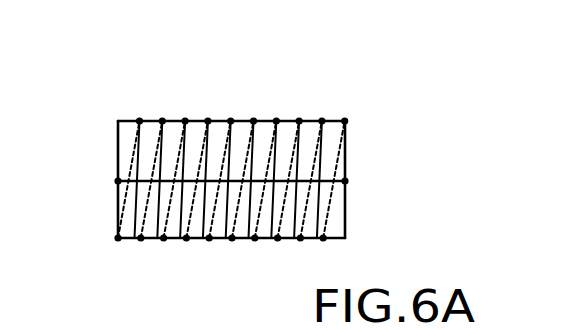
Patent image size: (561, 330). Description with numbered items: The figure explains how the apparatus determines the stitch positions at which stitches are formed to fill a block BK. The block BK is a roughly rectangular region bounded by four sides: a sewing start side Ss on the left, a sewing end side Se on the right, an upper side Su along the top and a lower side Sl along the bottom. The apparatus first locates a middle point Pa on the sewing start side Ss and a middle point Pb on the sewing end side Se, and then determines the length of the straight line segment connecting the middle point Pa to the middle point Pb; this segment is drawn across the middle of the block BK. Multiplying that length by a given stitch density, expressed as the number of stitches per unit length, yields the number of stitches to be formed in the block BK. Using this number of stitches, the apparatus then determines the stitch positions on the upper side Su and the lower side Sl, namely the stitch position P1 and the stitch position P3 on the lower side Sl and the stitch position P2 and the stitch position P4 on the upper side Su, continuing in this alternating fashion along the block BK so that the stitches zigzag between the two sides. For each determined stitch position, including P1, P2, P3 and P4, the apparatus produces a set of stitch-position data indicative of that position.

The block BK is at (252, 80).
The sewing start side Ss is at (113, 129).
The upper side Su is at (288, 120).
The sewing end side Se is at (345, 211).
The lower side Sl is at (242, 239).
The stitch position P1 is at (120, 240).
The stitch position P2 is at (140, 120).
The stitch position P3 is at (141, 240).
The stitch position P4 is at (163, 121).
The middle point Pa is at (118, 180).
The middle point Pb is at (345, 182).